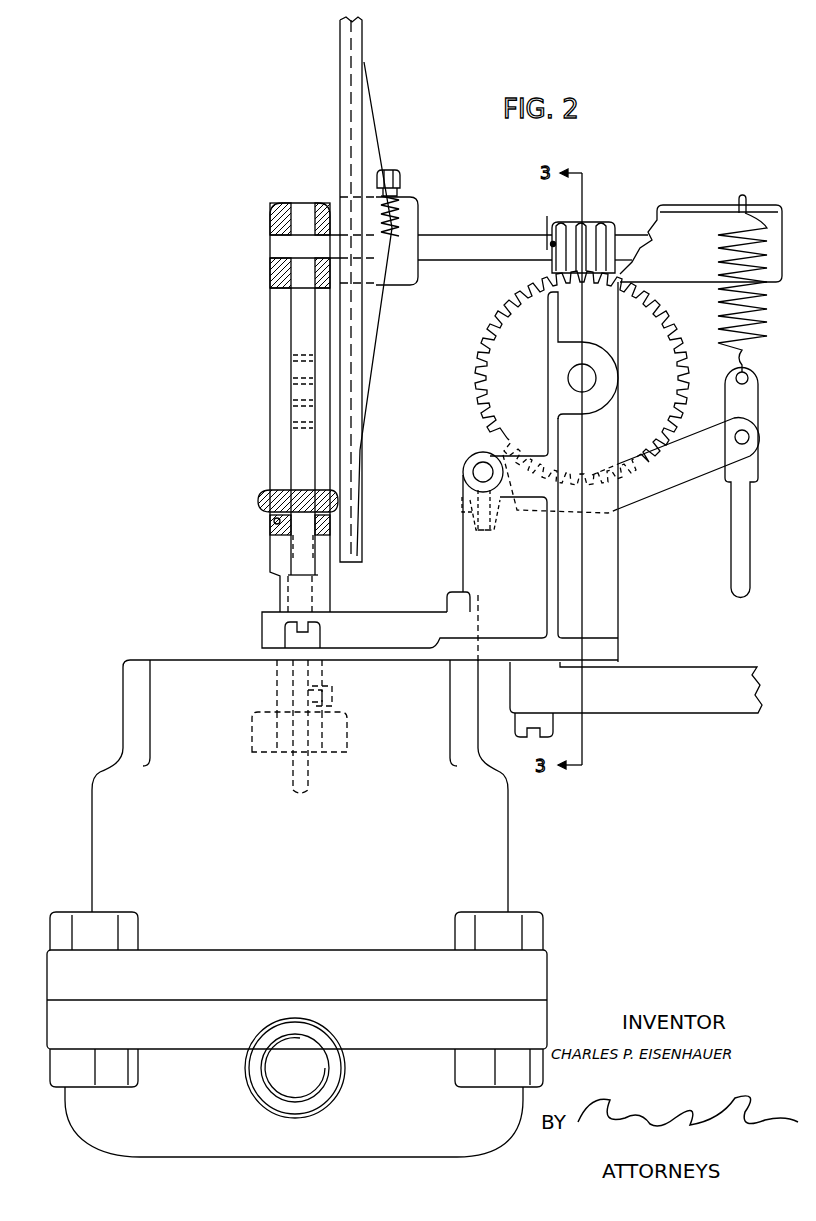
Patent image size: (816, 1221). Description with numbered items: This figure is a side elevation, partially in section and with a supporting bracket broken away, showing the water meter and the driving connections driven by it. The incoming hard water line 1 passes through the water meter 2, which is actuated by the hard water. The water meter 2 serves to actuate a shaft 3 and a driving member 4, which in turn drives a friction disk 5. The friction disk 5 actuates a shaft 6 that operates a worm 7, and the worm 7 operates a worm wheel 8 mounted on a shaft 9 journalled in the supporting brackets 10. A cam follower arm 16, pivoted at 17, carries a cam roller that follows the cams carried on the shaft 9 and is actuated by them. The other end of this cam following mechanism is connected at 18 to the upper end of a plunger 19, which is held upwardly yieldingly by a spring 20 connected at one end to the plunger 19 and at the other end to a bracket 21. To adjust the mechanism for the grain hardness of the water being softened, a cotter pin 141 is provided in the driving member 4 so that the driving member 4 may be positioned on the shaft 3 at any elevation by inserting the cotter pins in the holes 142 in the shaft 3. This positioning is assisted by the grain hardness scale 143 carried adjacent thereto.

The incoming hard water line 1 is at (322, 1070).
The water meter 2 is at (92, 800).
The shaft 3 is at (291, 455).
The driving member 4 is at (266, 492).
The friction disk 5 is at (340, 68).
The shaft 6 is at (460, 236).
The worm 7 is at (560, 225).
The worm wheel 8 is at (516, 293).
The shaft 9 is at (592, 378).
The supporting brackets 10 is at (618, 330).
The cam follower arm 16 is at (665, 478).
The pivot 17 is at (470, 462).
The connection 18 is at (750, 437).
The plunger 19 is at (758, 408).
The spring 20 is at (768, 303).
The bracket 21 is at (776, 205).
The cotter pin 141 is at (270, 523).
The holes 142 is at (291, 380).
The grain hardness scale 143 is at (270, 318).